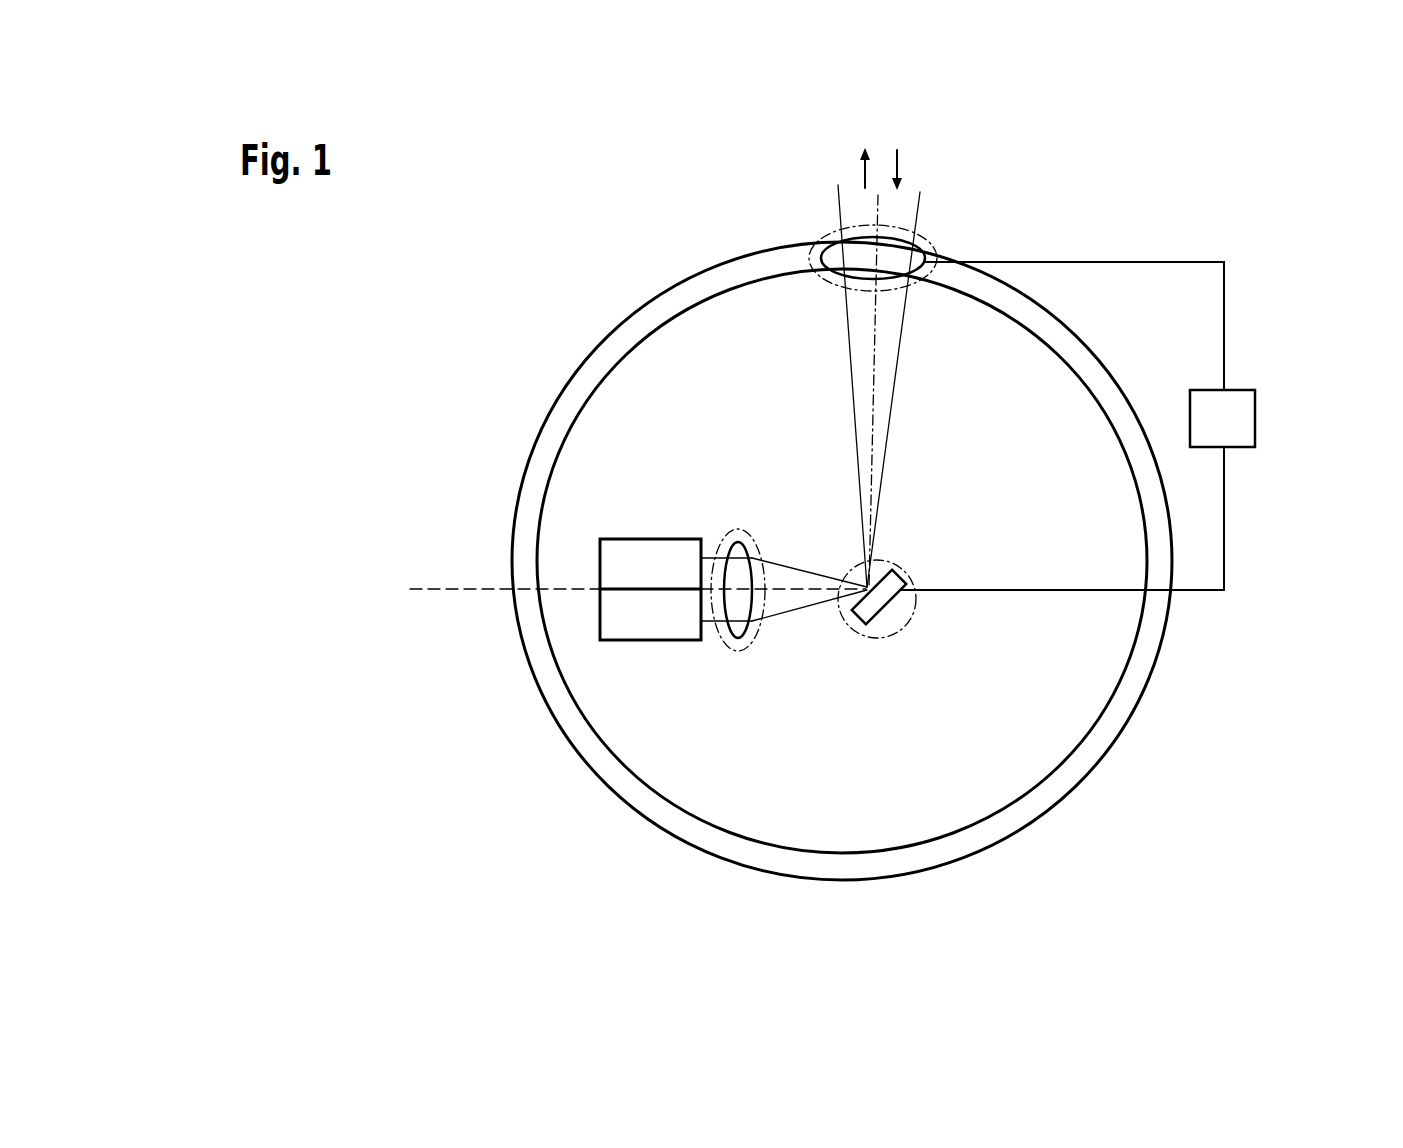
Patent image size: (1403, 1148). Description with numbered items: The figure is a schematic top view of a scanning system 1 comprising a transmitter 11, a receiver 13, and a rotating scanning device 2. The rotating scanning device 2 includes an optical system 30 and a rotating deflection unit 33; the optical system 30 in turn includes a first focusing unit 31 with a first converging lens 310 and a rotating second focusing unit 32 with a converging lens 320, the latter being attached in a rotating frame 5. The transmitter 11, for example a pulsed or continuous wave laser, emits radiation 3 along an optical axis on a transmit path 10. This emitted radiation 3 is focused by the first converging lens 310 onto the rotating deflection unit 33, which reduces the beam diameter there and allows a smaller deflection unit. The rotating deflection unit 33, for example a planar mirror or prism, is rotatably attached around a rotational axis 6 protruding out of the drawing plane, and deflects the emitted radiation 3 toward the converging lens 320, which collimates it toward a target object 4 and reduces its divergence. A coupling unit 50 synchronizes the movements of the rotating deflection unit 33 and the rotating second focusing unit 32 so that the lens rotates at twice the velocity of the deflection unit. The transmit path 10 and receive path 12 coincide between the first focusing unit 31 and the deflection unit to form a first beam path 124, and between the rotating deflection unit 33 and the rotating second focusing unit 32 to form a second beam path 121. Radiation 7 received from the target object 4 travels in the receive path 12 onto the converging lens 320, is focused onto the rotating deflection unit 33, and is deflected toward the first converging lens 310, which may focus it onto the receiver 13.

The scanning system 1 is at (452, 294).
The rotating scanning device 2 is at (812, 242).
The emitted radiation 3 is at (712, 558).
The target object 4 is at (875, 144).
The rotating frame 5 is at (655, 310).
The rotational axis 6 is at (897, 604).
The received radiation 7 is at (903, 208).
The transmit path 10 is at (860, 519).
The transmitter 11 is at (622, 559).
The receive path 12 is at (883, 360).
The receiver 13 is at (622, 612).
The optical system 30 is at (735, 530).
The first focusing unit 31 is at (722, 636).
The rotating second focusing unit 32 is at (830, 290).
The rotating deflection unit 33 is at (910, 570).
The coupling unit 50 is at (1242, 418).
The second beam path 121 is at (883, 400).
The first beam path 124 is at (787, 603).
The first converging lens 310 is at (757, 640).
The converging lens 320 is at (900, 242).